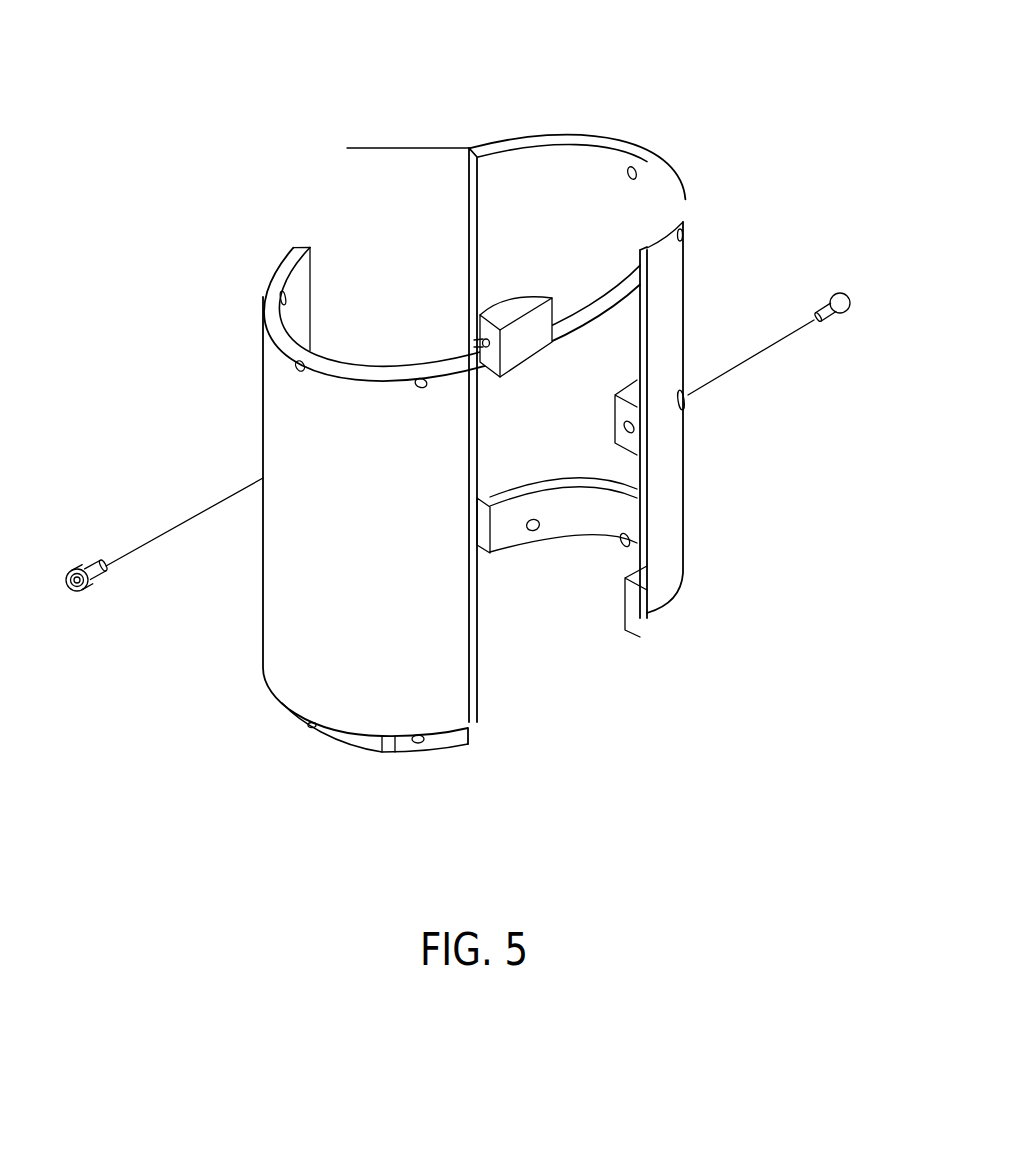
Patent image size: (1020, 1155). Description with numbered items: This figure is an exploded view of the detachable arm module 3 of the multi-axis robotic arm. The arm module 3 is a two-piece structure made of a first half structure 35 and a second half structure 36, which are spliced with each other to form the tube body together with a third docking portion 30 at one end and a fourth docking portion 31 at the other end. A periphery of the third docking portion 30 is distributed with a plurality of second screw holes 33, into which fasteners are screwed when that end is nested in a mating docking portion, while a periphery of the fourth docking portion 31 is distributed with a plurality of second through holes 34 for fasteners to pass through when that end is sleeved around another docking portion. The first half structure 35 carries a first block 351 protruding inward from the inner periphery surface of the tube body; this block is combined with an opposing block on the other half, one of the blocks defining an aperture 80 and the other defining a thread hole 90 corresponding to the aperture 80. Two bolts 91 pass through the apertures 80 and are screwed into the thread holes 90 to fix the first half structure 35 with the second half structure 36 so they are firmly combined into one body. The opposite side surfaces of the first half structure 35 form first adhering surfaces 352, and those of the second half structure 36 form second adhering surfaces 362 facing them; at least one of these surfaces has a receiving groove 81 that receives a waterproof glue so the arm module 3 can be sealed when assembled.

The detachable arm module 3 is at (278, 118).
The fourth docking portion 31 is at (295, 250).
The first block 351 is at (516, 336).
The receiving groove 81 is at (650, 245).
The first half structure 35 is at (686, 305).
The bolt 91 is at (78, 568).
The thread hole 90 is at (483, 343).
The second through hole 34 is at (298, 368).
The aperture 80 is at (688, 402).
The second half structure 36 is at (293, 561).
The second adhering surface 362 is at (479, 607).
The first adhering surface 352 is at (645, 578).
The third docking portion 30 is at (468, 729).
The second screw hole 33 is at (416, 747).